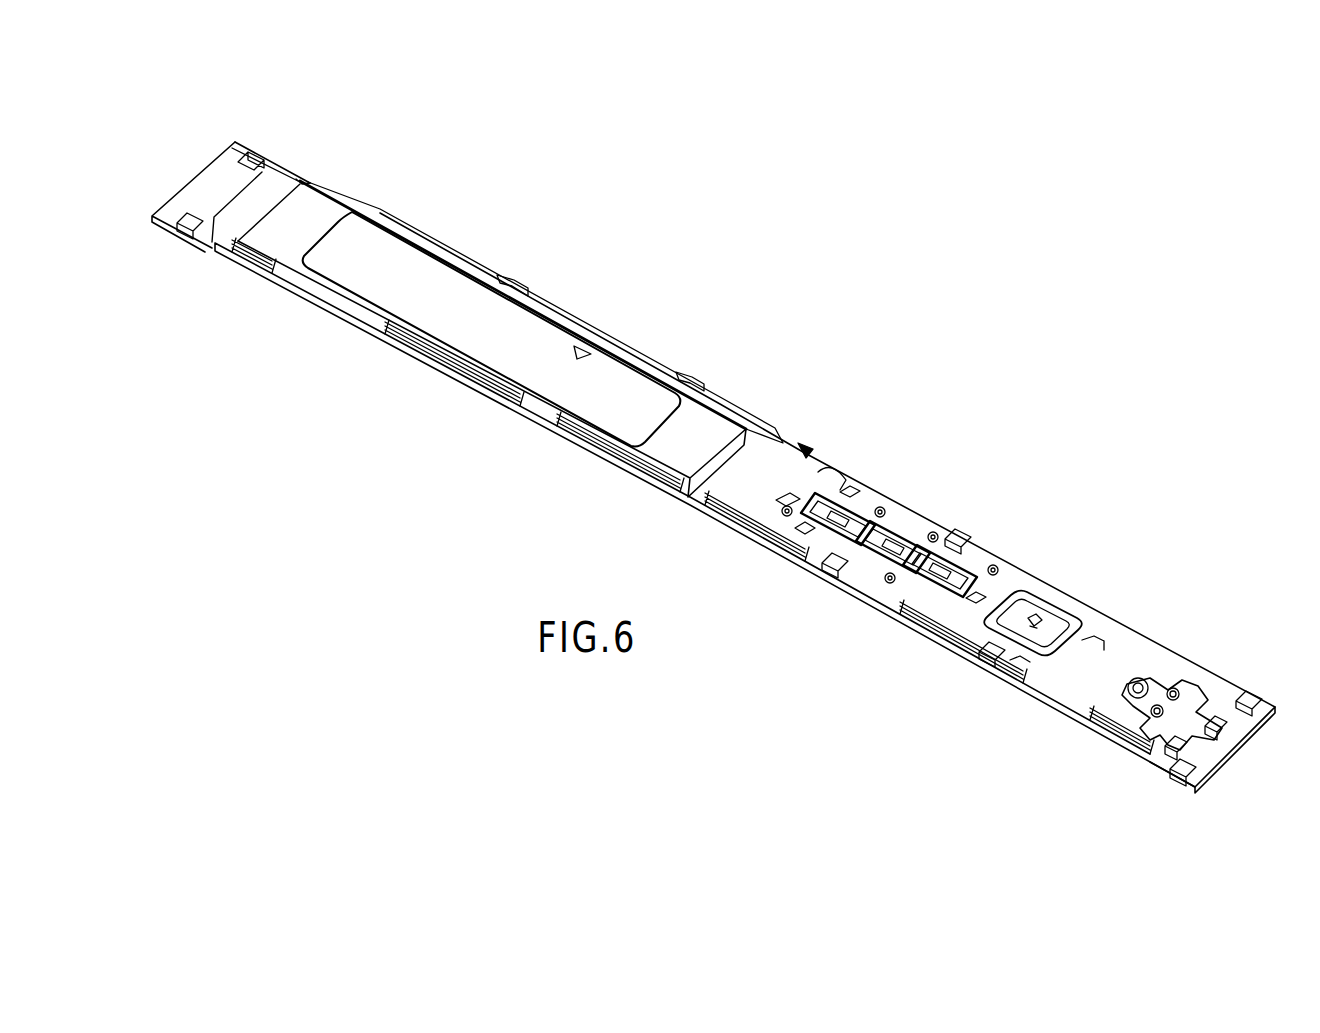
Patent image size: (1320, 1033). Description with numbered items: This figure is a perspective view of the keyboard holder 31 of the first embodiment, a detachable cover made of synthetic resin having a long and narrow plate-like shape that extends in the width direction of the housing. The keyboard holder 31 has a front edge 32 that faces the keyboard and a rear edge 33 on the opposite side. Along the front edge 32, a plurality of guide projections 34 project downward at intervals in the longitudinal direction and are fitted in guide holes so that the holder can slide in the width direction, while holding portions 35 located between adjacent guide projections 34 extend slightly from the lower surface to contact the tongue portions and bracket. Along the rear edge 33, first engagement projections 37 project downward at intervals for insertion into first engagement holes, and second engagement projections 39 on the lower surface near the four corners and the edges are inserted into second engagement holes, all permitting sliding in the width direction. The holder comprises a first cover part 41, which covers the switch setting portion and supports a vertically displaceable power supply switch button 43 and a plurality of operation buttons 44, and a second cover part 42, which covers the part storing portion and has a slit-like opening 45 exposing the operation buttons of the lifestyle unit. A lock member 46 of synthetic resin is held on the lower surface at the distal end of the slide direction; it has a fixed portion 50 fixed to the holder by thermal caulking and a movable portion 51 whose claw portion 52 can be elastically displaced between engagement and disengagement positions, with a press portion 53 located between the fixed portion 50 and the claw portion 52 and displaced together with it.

The keyboard holder 31 is at (806, 448).
The front edge 32 is at (770, 550).
The rear edge 33 is at (1032, 566).
The guide projections 34 is at (247, 264).
The holding portions 35 is at (326, 304).
The first engagement projections 37 is at (521, 283).
The second engagement projections 39 is at (241, 158).
The first cover part 41 is at (1115, 652).
The second cover part 42 is at (300, 212).
The power supply switch button 43 is at (1047, 620).
The operation buttons 44 is at (924, 550).
The opening 45 is at (587, 345).
The lock member 46 is at (1150, 574).
The fixed portion 50 is at (1149, 682).
The movable portion 51 is at (1186, 708).
The claw portion 52 is at (1210, 729).
The press portion 53 is at (1172, 748).